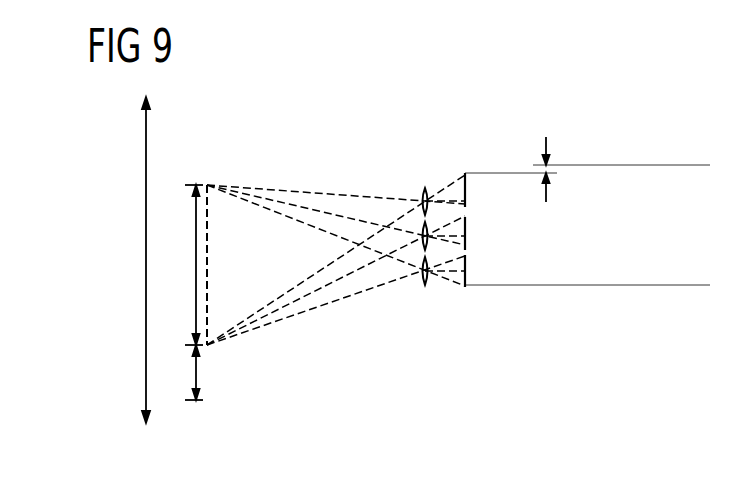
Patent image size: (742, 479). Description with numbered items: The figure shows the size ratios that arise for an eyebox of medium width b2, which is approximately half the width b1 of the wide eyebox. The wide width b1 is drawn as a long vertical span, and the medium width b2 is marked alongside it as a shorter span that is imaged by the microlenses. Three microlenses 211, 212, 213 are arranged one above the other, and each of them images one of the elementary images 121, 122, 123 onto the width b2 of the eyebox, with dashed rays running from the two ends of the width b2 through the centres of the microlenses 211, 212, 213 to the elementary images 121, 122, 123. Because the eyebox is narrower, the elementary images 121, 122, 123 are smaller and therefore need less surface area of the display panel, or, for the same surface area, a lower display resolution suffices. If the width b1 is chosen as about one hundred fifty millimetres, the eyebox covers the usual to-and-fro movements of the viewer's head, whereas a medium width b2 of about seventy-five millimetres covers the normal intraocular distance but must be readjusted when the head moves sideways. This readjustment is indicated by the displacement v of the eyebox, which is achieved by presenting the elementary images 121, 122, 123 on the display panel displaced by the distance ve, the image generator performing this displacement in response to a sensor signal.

The width of the wide eyebox b1 is at (146, 258).
The width of the medium eyebox b2 is at (195, 248).
The displacement of the eyebox v is at (196, 373).
The displacement distance of the elementary images ve is at (546, 144).
The microlens 211 is at (423, 186).
The microlens 212 is at (421, 244).
The microlens 213 is at (421, 283).
The elementary image 121 is at (466, 200).
The elementary image 122 is at (466, 232).
The elementary image 123 is at (466, 268).